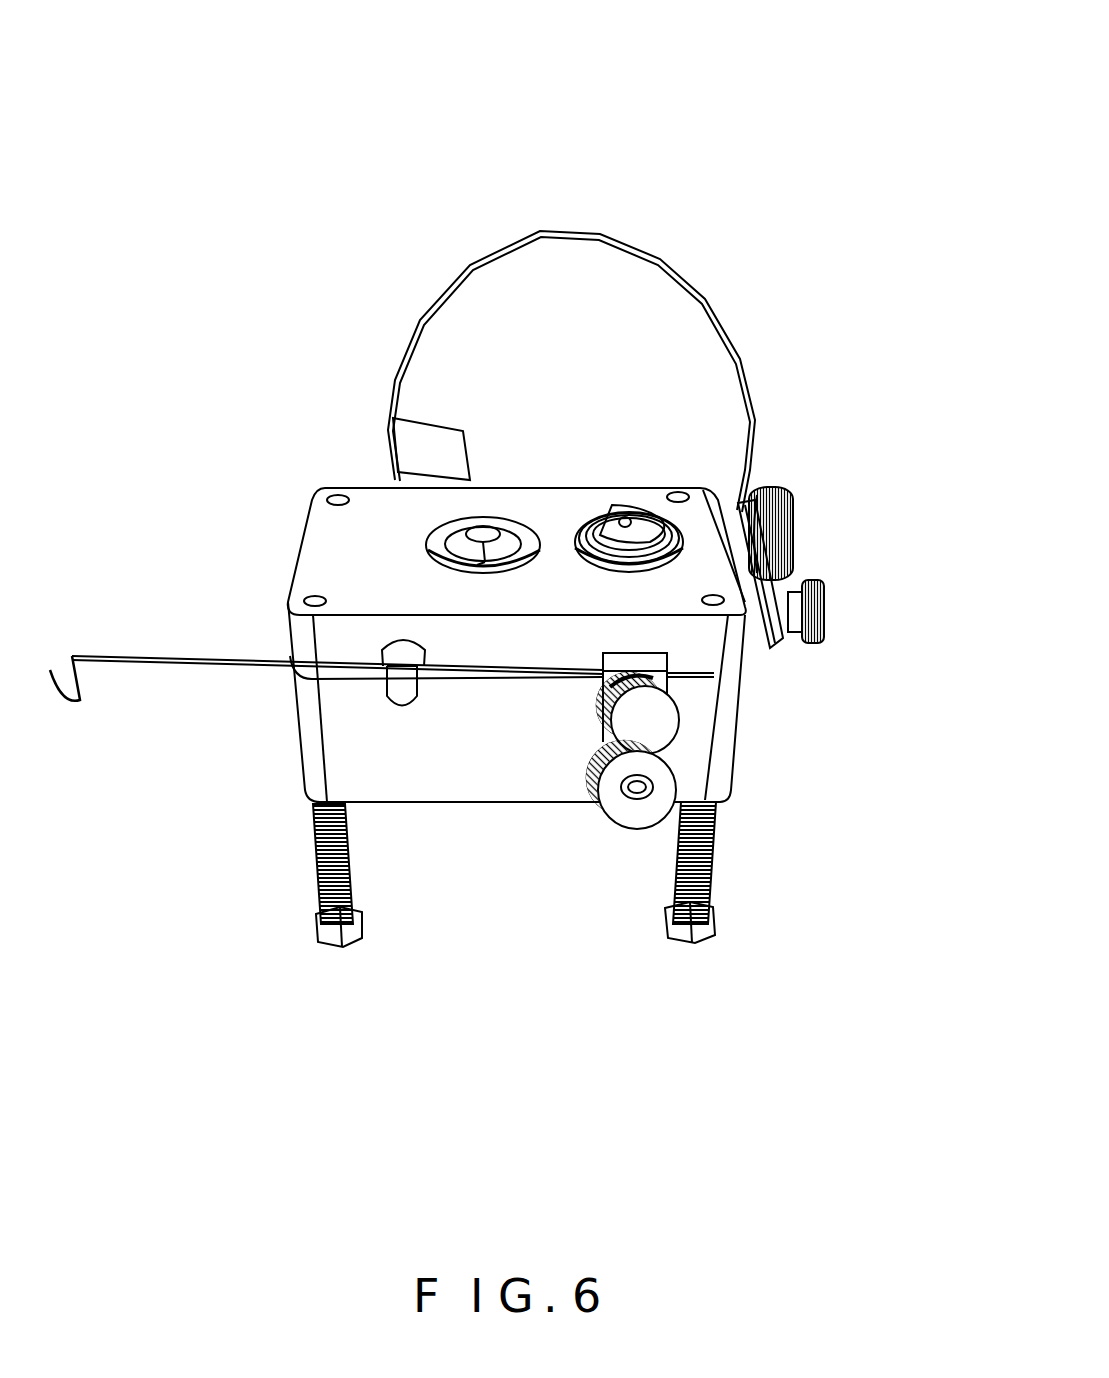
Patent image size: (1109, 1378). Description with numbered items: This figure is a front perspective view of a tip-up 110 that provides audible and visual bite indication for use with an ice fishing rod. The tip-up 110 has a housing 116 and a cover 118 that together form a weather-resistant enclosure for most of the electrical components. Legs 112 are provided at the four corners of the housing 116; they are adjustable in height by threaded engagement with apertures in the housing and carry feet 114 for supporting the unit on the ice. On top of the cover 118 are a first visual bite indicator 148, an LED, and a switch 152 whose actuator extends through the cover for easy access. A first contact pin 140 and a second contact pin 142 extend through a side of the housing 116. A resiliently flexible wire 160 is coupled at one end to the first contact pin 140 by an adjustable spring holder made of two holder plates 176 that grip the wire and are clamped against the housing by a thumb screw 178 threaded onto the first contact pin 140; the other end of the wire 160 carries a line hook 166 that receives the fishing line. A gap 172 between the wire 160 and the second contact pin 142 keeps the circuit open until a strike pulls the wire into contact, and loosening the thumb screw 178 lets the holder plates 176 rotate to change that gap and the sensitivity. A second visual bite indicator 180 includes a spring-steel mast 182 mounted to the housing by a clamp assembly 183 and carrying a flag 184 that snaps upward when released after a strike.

The tip-up 110 is at (872, 46).
The legs 112 is at (352, 858).
The feet 114 is at (350, 947).
The housing 116 is at (722, 732).
The cover 118 is at (693, 652).
The first contact pin 140 is at (636, 788).
The second contact pin 142 is at (397, 702).
The first visual bite indicator 148 is at (500, 540).
The switch 152 is at (625, 518).
The wire 160 is at (175, 650).
The line hook 166 is at (63, 705).
The gap 172 is at (370, 684).
The holder plates 176 is at (632, 665).
The thumb screw 178 is at (585, 800).
The second visual bite indicator 180 is at (752, 290).
The mast 182 is at (750, 370).
The clamp assembly 183 is at (808, 517).
The flag 184 is at (438, 437).